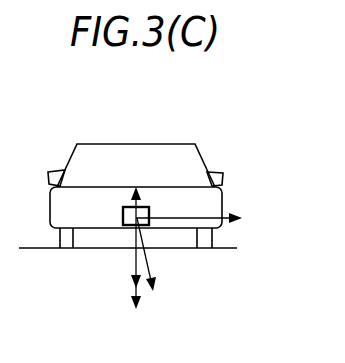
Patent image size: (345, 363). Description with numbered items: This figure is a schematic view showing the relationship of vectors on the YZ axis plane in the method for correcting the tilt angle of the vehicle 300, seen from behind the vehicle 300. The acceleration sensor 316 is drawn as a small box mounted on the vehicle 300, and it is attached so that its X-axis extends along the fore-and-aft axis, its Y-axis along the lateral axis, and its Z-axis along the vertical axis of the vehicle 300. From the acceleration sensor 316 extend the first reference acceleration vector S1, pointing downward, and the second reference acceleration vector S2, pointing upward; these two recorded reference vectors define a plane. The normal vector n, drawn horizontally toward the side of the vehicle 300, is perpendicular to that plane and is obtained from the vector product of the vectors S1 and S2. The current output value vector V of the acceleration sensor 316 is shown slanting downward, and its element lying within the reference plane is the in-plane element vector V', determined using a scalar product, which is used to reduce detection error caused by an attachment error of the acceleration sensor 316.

The vehicle 300 is at (108, 144).
The acceleration sensor 316 is at (123, 219).
The second reference acceleration vector S2 is at (127, 161).
The first reference acceleration vector S1 is at (125, 306).
The normal vector n is at (257, 196).
The current output value vector V is at (157, 254).
The in-plane element vector V' is at (124, 274).